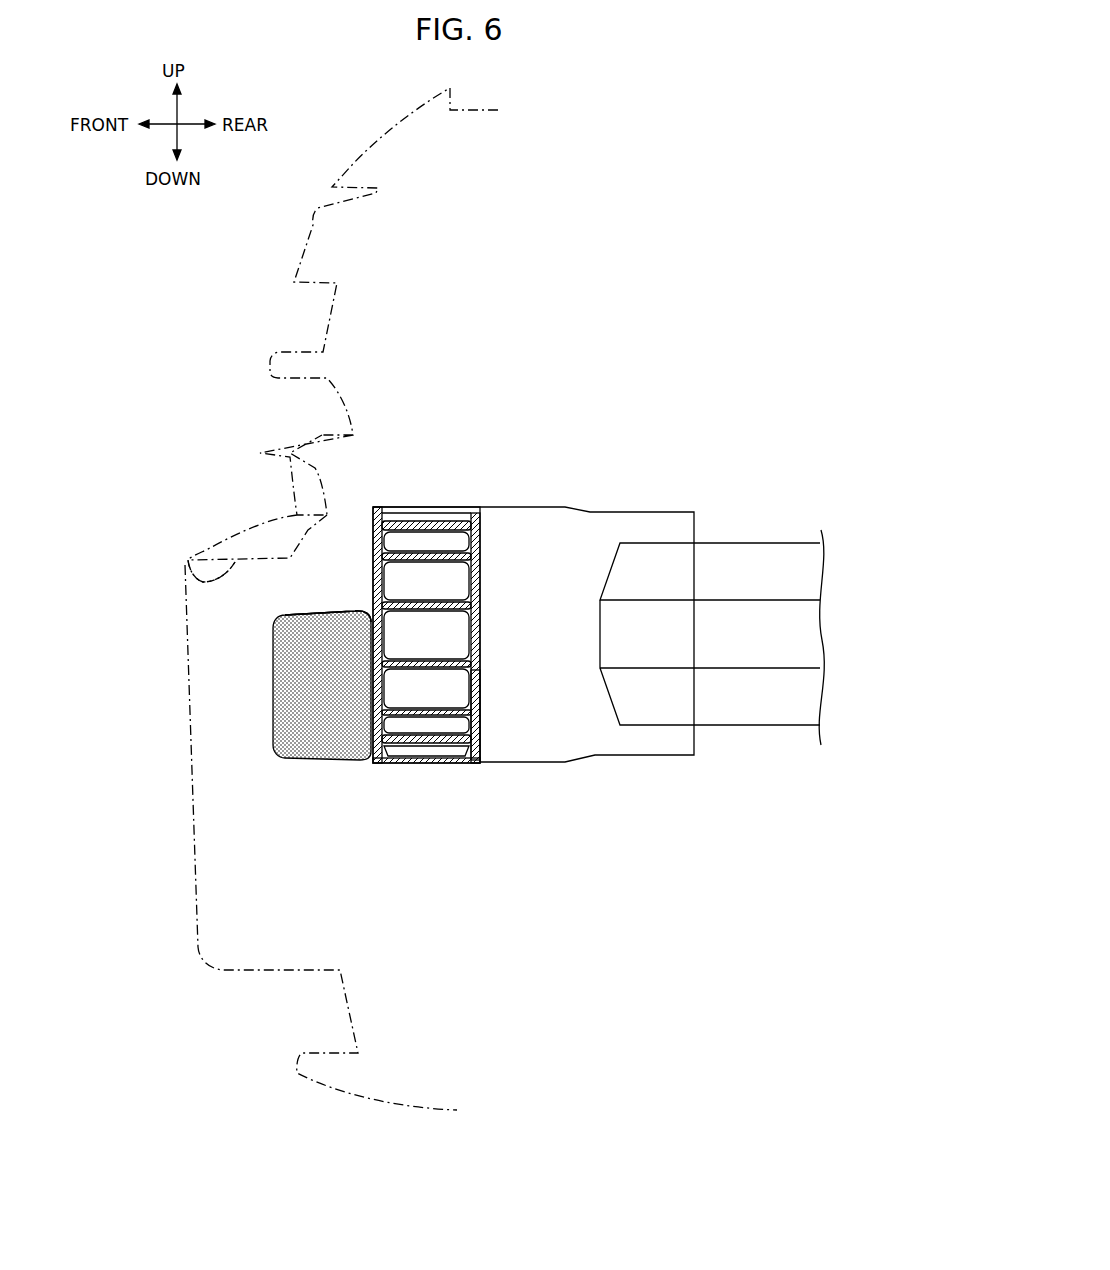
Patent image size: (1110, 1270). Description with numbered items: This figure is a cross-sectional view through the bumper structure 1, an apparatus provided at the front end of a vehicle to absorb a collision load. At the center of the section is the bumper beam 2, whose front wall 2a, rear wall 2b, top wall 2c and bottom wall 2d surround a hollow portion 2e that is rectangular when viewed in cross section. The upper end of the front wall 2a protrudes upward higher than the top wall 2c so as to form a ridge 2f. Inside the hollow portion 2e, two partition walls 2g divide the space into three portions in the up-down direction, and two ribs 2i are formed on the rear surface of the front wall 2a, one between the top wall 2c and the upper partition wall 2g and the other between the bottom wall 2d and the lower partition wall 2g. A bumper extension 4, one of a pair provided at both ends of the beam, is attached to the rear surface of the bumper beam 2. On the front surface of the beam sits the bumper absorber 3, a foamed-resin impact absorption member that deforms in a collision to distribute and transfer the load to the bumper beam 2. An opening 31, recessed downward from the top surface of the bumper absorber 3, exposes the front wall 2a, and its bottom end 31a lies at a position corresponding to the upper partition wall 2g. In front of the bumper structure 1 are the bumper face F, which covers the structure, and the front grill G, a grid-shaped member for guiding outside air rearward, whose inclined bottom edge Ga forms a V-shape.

The bumper structure 1 is at (466, 417).
The bumper beam 2 is at (505, 506).
The front wall 2a is at (372, 583).
The rear wall 2b is at (480, 578).
The top wall 2c is at (422, 521).
The bottom wall 2d is at (424, 764).
The hollow portion 2e is at (478, 692).
The ridge 2f is at (377, 505).
The partition wall 2g is at (440, 657).
The rib 2i is at (392, 562).
The bumper absorber 3 is at (271, 706).
The opening 31 is at (318, 610).
The bottom end 31a is at (318, 610).
The bumper extension 4 is at (750, 541).
The front grill G is at (323, 336).
The bottom edge Ga is at (186, 569).
The bumper face F is at (192, 800).